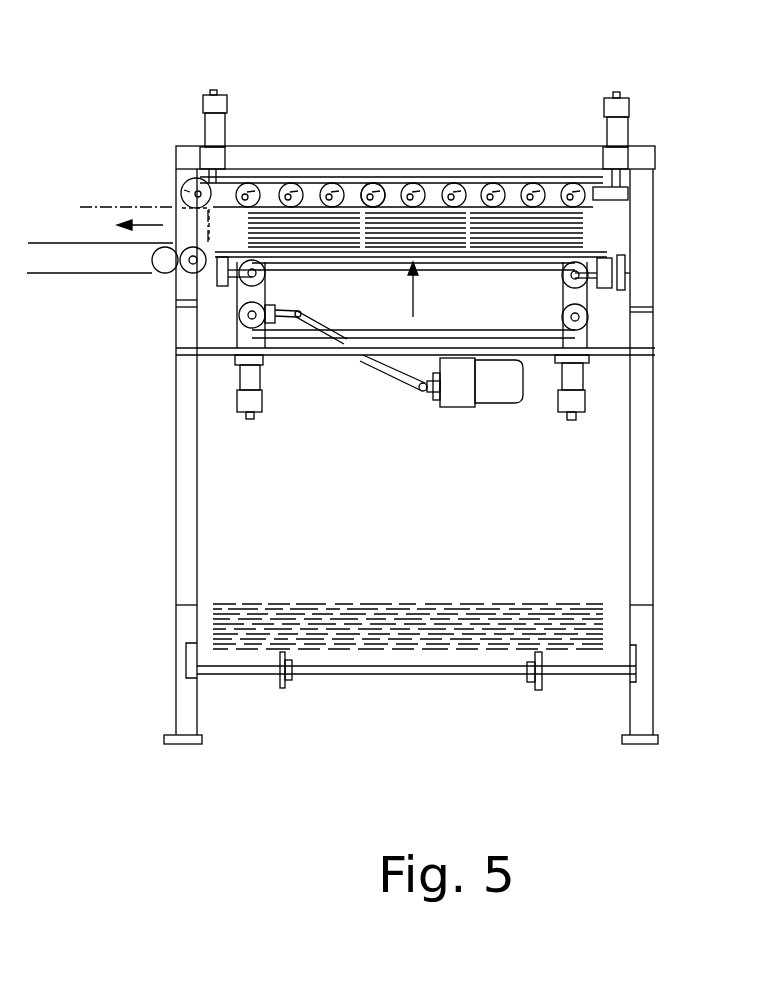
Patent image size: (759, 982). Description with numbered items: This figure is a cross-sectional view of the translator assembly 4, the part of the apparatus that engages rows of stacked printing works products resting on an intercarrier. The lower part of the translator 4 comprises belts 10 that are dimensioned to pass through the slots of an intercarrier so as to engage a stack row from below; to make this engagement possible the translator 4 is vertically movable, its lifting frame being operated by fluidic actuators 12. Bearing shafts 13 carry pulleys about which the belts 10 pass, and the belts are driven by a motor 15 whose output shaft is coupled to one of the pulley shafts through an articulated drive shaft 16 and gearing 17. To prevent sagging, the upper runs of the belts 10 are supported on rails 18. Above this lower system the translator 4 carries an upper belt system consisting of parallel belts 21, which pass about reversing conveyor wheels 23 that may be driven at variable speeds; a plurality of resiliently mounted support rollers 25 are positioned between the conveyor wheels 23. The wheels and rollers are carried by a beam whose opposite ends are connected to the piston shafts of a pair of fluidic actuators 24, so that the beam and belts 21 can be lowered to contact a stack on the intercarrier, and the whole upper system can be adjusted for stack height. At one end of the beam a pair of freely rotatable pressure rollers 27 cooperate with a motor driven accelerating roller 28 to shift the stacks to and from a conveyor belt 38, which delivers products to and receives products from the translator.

The translator assembly 4 is at (461, 169).
The belts 10 is at (590, 303).
The fluidic actuators 12 is at (252, 400).
The bearing shafts 13 is at (578, 316).
The motor 15 is at (453, 395).
The articulated drive shaft 16 is at (380, 365).
The gearing 17 is at (278, 303).
The rails 18 is at (473, 265).
The parallel belts 21 is at (393, 189).
The reversing conveyor wheels 23 is at (247, 189).
The fluidic actuators 24 is at (620, 128).
The support rollers 25 is at (333, 189).
The pressure rollers 27 is at (186, 189).
The accelerating roller 28 is at (187, 267).
The conveyor belt 38 is at (93, 268).